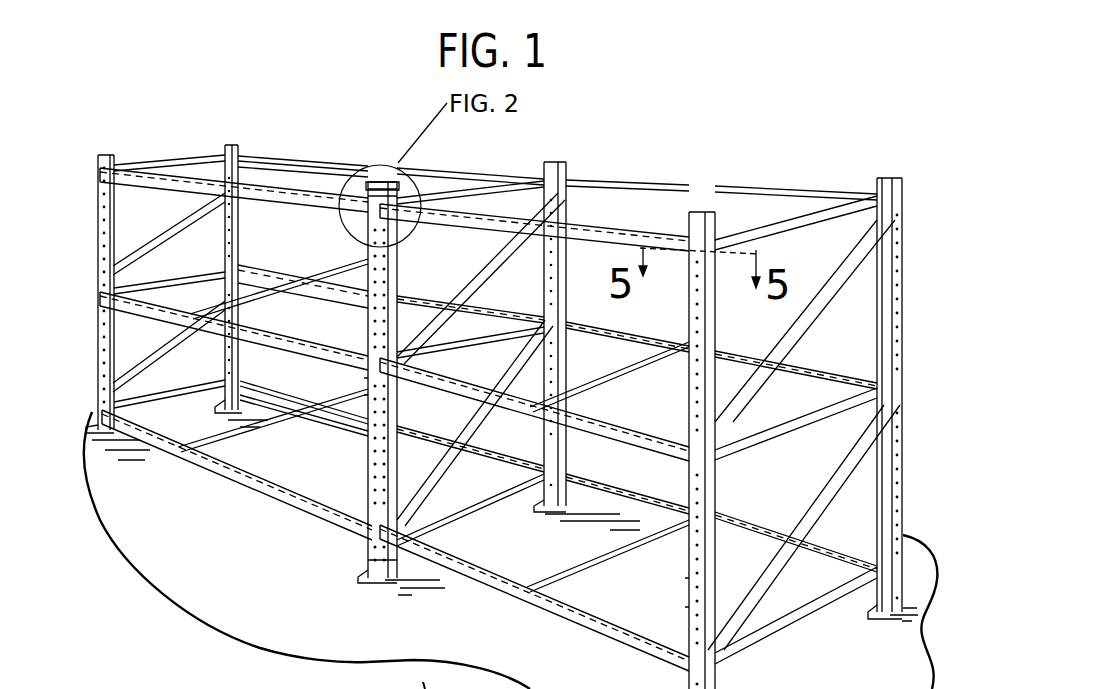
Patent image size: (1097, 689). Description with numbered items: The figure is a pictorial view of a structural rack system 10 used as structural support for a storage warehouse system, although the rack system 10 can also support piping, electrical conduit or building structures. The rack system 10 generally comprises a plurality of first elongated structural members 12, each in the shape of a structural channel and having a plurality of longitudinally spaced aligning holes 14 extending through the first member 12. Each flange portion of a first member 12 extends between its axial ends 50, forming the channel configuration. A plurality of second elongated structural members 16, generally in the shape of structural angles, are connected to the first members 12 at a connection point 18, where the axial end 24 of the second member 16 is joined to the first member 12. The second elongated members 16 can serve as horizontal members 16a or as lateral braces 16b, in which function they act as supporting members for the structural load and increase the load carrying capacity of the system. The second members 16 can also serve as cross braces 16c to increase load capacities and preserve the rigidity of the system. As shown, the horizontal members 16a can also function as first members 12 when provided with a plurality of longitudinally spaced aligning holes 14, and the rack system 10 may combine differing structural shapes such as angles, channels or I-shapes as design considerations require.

The structural rack system 10 is at (283, 131).
The first elongated structural member 12 is at (900, 489).
The aligning holes 14 is at (366, 397).
The second elongated structural member 16 is at (590, 218).
The horizontal members 16a is at (483, 578).
The lateral braces 16b is at (316, 457).
The cross braces 16c is at (815, 318).
The connection point 18 is at (365, 190).
The axial end 24 is at (110, 175).
The axial ends 50 is at (395, 168).